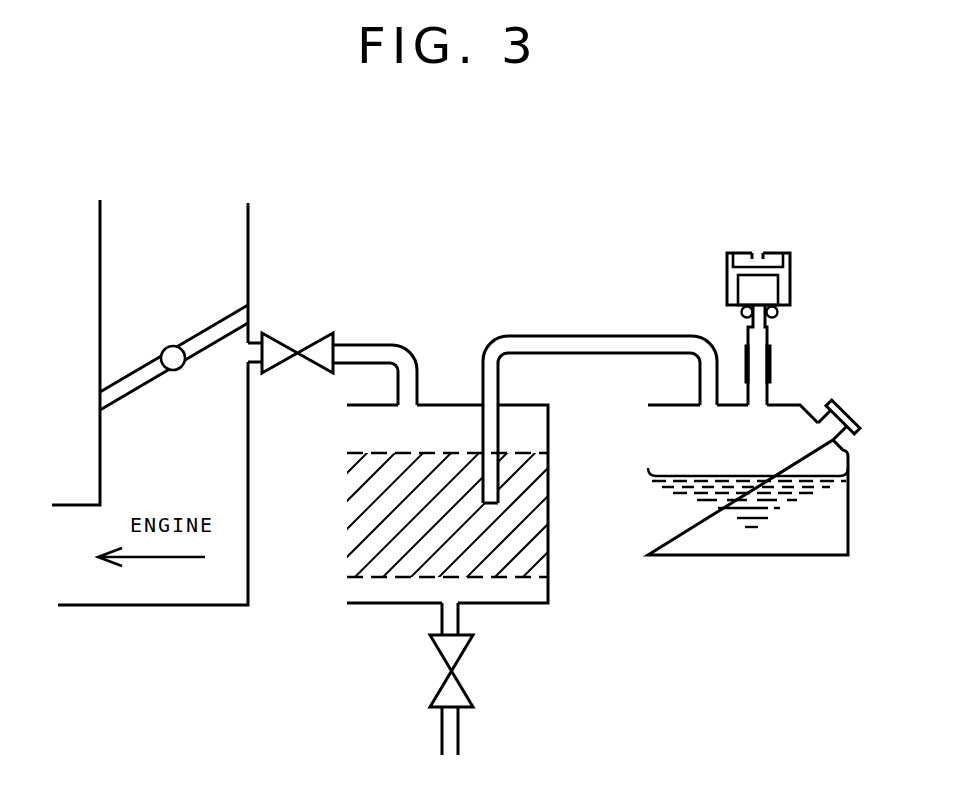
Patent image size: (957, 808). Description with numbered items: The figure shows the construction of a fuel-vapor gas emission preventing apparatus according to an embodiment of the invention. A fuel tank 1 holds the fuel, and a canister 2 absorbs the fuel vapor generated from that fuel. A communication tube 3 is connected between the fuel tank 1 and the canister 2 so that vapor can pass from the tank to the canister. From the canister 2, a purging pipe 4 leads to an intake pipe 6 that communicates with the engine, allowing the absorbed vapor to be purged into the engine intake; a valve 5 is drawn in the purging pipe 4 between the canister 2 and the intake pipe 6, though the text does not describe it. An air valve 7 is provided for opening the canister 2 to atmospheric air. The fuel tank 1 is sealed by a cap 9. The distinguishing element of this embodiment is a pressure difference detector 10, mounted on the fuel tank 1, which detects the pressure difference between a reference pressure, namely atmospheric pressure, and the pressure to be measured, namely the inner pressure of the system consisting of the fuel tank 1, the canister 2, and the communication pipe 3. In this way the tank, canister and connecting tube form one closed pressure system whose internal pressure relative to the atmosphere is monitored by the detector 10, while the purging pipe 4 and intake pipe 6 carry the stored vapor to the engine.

The fuel tank 1 is at (745, 557).
The canister 2 is at (368, 593).
The communication tube 3 is at (642, 333).
The purging pipe 4 is at (393, 342).
The purge control valve 5 is at (290, 348).
The intake pipe 6 is at (248, 240).
The air valve 7 is at (463, 657).
The cap 9 is at (837, 403).
The pressure difference detector 10 is at (787, 265).